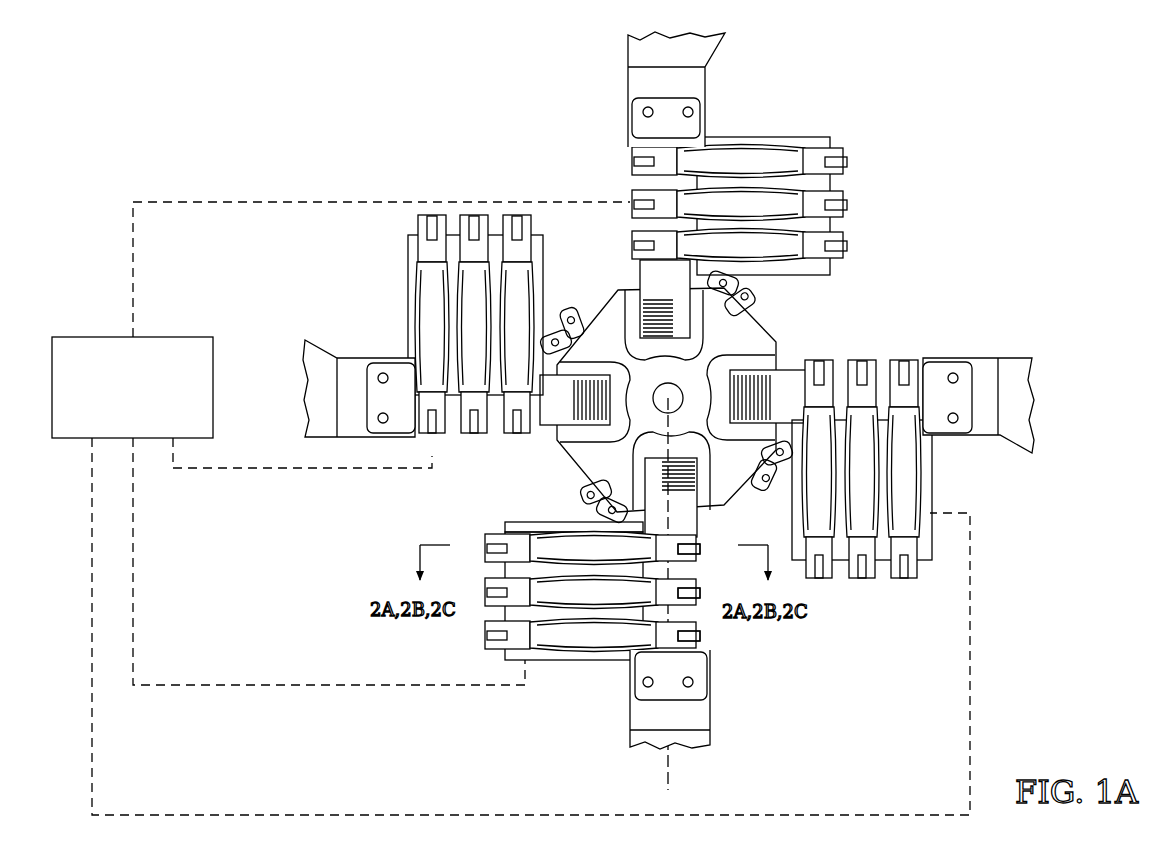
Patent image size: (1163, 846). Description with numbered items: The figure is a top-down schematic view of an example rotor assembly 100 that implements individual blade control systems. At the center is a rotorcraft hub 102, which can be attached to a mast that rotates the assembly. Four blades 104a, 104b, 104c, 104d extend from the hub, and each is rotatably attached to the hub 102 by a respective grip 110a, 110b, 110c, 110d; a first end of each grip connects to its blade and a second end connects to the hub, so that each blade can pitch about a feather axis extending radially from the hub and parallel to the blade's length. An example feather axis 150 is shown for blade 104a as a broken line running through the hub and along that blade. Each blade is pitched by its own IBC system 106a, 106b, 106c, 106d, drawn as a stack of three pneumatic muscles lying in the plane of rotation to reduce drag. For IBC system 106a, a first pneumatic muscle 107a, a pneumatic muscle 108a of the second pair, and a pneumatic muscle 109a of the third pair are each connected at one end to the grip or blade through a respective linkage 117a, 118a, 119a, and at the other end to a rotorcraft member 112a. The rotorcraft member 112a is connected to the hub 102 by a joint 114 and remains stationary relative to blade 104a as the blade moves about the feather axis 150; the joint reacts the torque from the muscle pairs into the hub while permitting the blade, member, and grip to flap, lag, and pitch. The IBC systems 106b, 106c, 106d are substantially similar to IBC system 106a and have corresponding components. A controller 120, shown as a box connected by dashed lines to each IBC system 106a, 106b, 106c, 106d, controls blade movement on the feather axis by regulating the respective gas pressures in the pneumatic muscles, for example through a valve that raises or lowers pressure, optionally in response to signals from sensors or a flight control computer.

The rotor assembly 100 is at (258, 74).
The rotorcraft hub 102 is at (758, 348).
The blade 104a is at (718, 699).
The blade 104b is at (321, 367).
The blade 104c is at (672, 88).
The blade 104d is at (986, 372).
The individual blade control system 106a is at (580, 610).
The individual blade control system 106b is at (375, 268).
The individual blade control system 106c is at (886, 155).
The individual blade control system 106d is at (985, 493).
The first pneumatic muscle 107a is at (563, 540).
The pneumatic muscle 108a is at (562, 600).
The pneumatic muscle 109a is at (602, 643).
The grip 110a is at (690, 672).
The grip 110b is at (376, 393).
The grip 110c is at (672, 103).
The grip 110d is at (958, 395).
The rotorcraft member 112a is at (512, 522).
The joint 114 is at (585, 478).
The first linkage 117a is at (700, 534).
The linkage 118a is at (678, 594).
The linkage 119a is at (700, 644).
The controller 120 is at (154, 399).
The feather axis 150 is at (670, 775).